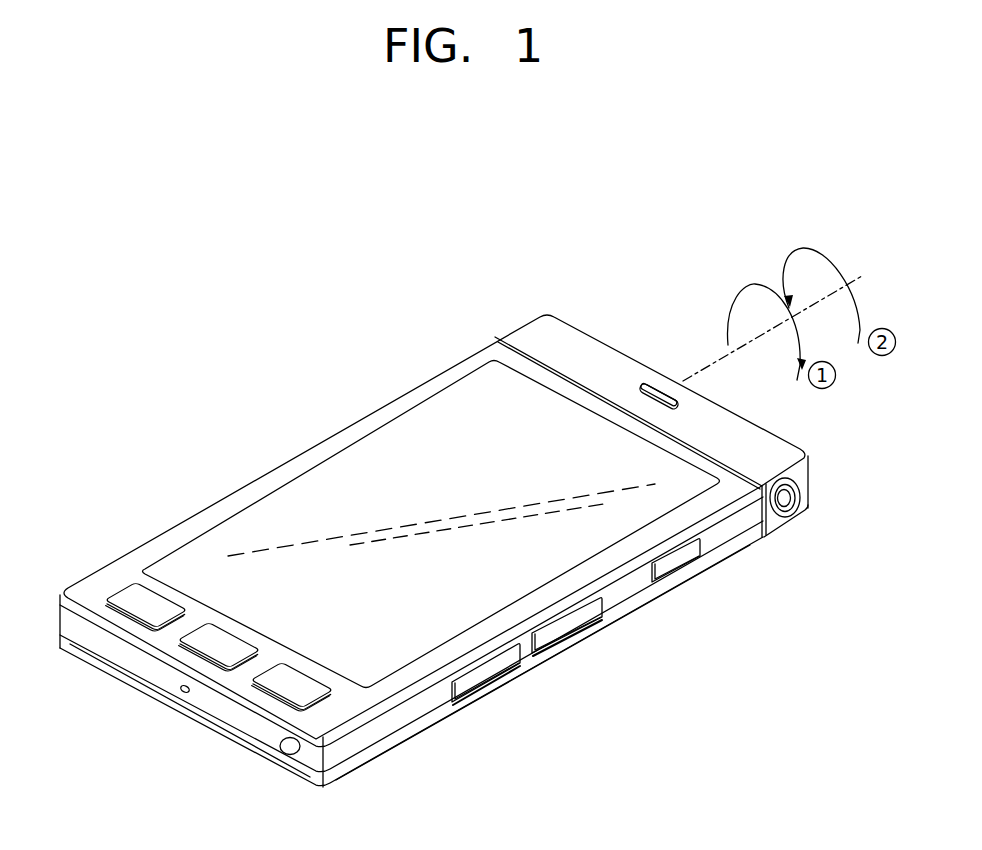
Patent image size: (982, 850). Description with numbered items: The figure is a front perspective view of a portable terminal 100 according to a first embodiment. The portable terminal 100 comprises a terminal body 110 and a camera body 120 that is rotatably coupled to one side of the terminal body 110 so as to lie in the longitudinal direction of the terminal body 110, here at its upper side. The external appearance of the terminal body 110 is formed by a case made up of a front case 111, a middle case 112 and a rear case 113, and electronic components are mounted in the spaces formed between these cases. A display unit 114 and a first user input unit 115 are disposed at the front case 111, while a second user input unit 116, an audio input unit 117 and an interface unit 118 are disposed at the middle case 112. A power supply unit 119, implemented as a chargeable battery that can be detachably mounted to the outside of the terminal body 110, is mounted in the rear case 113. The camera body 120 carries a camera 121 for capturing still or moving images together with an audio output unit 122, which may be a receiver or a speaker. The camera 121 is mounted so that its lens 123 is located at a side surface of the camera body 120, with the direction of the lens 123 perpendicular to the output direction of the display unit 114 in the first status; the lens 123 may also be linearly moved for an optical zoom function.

The portable terminal 100 is at (150, 249).
The terminal body 110 is at (298, 444).
The front case 111 is at (397, 703).
The middle case 112 is at (375, 737).
The rear case 113 is at (354, 769).
The display unit 114 is at (433, 420).
The first user input unit 115 is at (207, 645).
The second user input unit 116 is at (497, 672).
The audio input unit 117 is at (184, 691).
The interface unit 118 is at (672, 565).
The power supply unit 119 is at (289, 748).
The camera body 120 is at (509, 325).
The camera 121 is at (812, 480).
The audio output unit 122 is at (656, 392).
The lens 123 is at (790, 502).